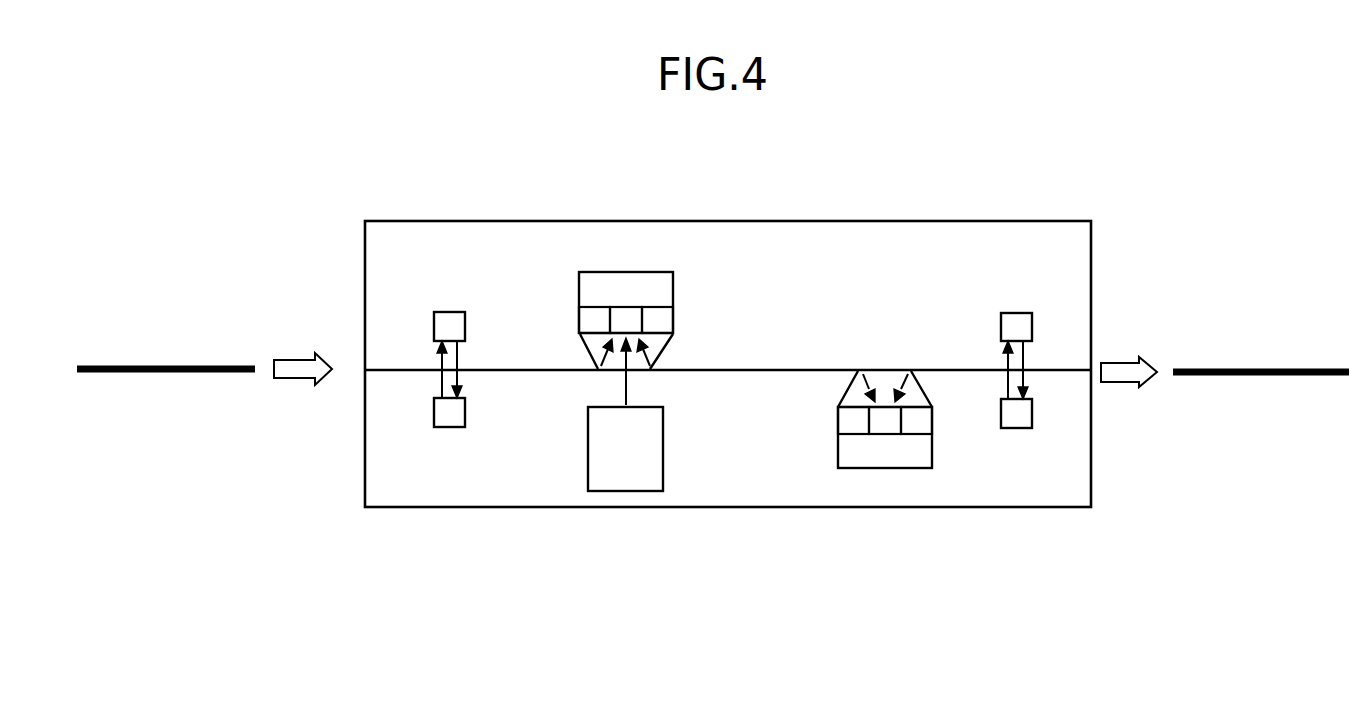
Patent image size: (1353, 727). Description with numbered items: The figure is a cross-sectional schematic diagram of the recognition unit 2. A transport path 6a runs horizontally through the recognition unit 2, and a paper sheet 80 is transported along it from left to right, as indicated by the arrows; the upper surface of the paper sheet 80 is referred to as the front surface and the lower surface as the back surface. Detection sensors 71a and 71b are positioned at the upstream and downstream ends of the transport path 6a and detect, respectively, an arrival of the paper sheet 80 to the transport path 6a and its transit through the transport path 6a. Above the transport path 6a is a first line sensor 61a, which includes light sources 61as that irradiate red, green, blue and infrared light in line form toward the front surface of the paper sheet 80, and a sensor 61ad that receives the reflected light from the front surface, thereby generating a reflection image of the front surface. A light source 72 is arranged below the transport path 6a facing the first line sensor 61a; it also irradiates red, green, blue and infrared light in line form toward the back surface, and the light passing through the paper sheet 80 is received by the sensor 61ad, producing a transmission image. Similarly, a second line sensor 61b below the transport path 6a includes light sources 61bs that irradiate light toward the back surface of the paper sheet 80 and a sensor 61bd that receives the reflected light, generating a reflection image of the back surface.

The recognition unit 2 is at (1093, 245).
The transport path 6a is at (395, 369).
The paper sheet 80 is at (148, 365).
The detection sensor 71a is at (447, 312).
The detection sensor 71b is at (1015, 313).
The first line sensor 61a is at (660, 272).
The light sources 61as is at (599, 313).
The sensor 61ad is at (628, 313).
The light source 72 is at (628, 467).
The second line sensor 61b is at (921, 483).
The light sources 61bs is at (860, 427).
The sensor 61bd is at (888, 428).